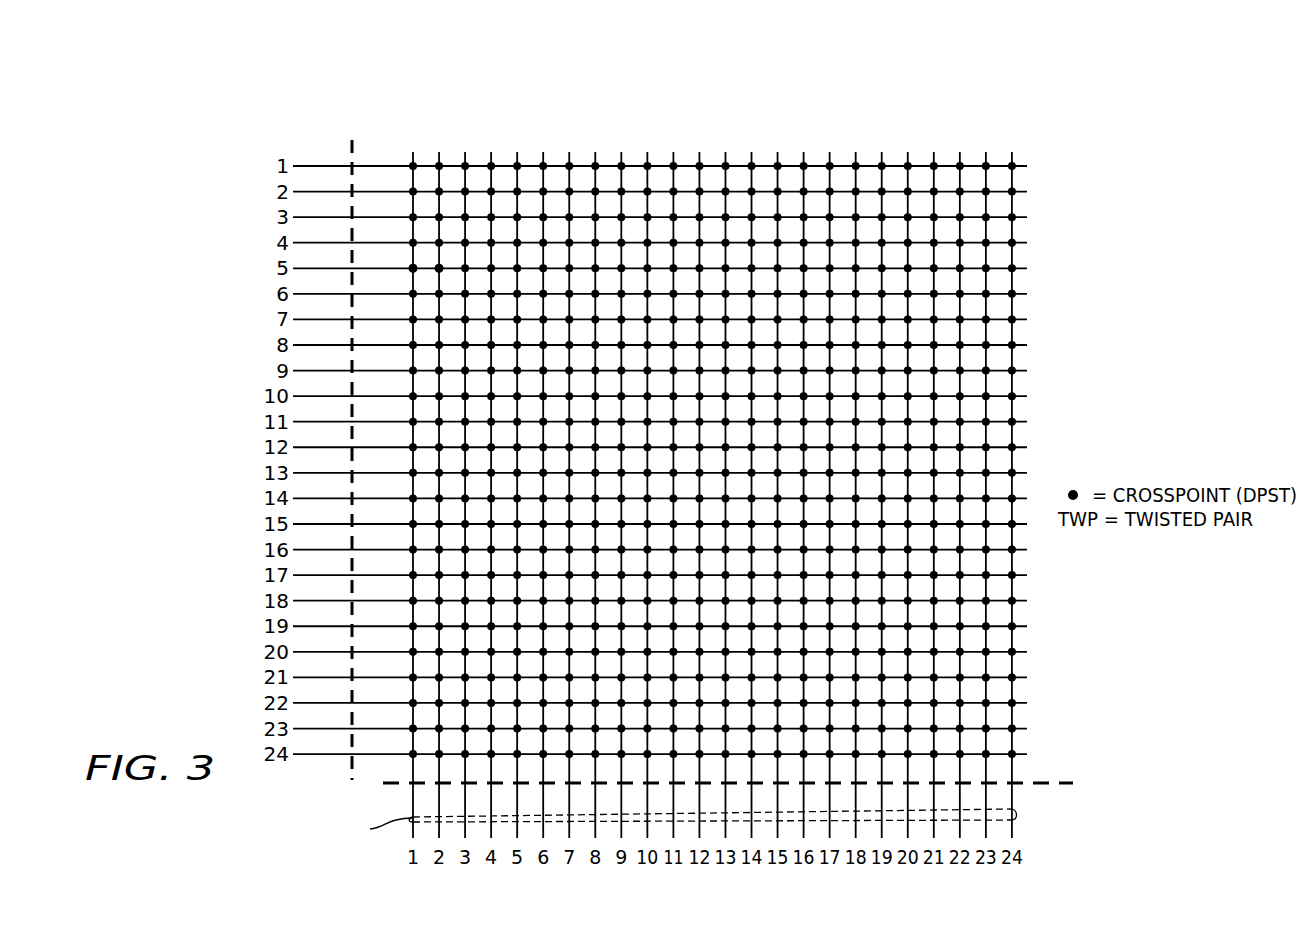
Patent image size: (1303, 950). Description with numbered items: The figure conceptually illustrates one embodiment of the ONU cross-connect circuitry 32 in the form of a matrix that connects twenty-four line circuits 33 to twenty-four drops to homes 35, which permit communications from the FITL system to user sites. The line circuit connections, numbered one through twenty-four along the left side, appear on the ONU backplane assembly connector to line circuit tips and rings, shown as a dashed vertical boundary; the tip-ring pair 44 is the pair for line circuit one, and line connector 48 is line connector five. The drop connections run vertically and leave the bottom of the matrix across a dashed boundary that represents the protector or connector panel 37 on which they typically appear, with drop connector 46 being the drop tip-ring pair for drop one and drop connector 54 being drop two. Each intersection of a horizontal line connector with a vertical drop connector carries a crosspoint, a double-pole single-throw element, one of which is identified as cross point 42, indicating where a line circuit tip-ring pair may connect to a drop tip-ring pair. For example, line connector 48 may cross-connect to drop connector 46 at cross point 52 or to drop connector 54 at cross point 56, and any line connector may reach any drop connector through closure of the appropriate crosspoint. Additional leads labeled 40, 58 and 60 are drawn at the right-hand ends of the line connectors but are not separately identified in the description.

The cross-connect matrix 32 is at (1052, 103).
The line circuits 33 is at (170, 491).
The drops to homes 35 is at (1052, 821).
The overvoltage protector/drop connector panel 37 is at (1242, 761).
The line circuit tip lead 40 is at (1018, 186).
The cross point 42 is at (1018, 213).
The line circuit tip-ring pair 44 is at (355, 161).
The drop tip-ring pair 46 is at (413, 830).
The line connector 5 48 is at (350, 270).
The cross point 52 is at (413, 268).
The drop connector 2 54 is at (439, 830).
The cross point 56 is at (439, 272).
The line circuit lead 58 is at (1018, 289).
The line circuit lead 60 is at (1018, 263).